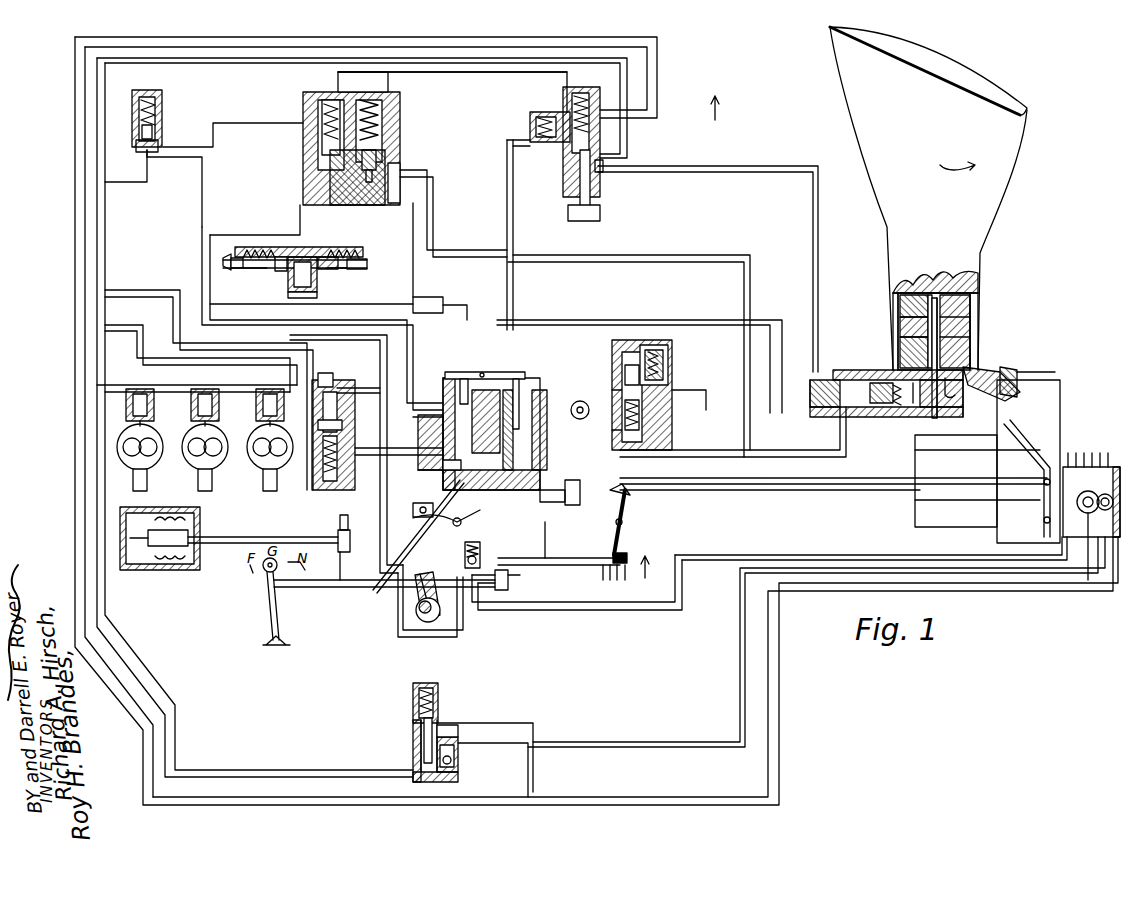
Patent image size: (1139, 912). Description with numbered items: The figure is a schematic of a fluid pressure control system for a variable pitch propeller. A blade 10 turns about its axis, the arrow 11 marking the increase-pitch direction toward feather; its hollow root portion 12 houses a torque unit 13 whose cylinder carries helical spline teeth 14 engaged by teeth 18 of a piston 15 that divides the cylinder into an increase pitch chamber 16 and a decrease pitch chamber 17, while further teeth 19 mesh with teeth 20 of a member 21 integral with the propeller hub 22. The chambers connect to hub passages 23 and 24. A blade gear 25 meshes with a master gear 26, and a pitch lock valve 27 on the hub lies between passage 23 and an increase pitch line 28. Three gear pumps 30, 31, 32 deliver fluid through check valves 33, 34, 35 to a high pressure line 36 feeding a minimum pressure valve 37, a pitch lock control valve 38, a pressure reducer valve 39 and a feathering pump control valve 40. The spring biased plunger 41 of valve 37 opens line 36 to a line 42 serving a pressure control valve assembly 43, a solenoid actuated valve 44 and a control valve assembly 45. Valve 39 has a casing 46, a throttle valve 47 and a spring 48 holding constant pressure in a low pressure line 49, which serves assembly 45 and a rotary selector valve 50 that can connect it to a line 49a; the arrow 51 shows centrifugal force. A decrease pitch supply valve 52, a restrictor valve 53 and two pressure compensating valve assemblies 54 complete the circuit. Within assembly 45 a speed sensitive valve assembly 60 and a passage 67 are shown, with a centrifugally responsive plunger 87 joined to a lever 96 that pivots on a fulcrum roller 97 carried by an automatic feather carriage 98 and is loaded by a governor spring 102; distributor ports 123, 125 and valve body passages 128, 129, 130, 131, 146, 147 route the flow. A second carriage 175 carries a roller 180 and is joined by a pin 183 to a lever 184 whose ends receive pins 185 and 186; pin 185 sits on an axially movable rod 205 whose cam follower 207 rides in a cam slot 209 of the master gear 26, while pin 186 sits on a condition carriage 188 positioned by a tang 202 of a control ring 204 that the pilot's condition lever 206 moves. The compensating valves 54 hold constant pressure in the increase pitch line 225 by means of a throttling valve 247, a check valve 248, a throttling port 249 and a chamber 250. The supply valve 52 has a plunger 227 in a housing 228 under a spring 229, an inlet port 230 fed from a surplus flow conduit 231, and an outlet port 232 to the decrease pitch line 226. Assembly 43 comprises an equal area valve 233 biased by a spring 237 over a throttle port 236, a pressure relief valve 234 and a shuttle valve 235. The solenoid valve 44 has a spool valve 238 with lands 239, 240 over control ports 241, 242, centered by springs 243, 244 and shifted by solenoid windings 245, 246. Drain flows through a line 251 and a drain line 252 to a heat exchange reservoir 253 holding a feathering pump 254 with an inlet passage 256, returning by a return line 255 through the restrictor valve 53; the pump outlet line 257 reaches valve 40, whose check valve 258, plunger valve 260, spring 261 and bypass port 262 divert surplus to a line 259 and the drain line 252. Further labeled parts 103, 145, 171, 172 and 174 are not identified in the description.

The funnel 10 is at (985, 205).
The arrow indicating direction 11 is at (958, 160).
The piston body 12 is at (975, 315).
The wall 13 is at (1008, 294).
The rod 14 is at (960, 350).
The piston section 15 is at (900, 325).
The lower piston section 16 is at (900, 355).
The upper piston section 17 is at (900, 300).
The cylinder wall 18 is at (893, 330).
The top surface 19 is at (933, 275).
The passage 20 is at (940, 330).
The bore 21 is at (948, 280).
The link 22 is at (960, 380).
The spring 23 is at (895, 408).
The pivot 24 is at (950, 400).
The knob 25 is at (1022, 372).
The lever 26 is at (1055, 376).
The valve 27 is at (818, 382).
The conduit 28 is at (848, 462).
The pump 30 is at (143, 472).
The pump 31 is at (208, 472).
The pump 32 is at (274, 467).
The relief valve 33 is at (154, 400).
The relief valve 34 is at (219, 400).
The relief valve 35 is at (278, 391).
The conduit 36 is at (113, 352).
The valve 37 is at (132, 150).
The valve 38 is at (603, 166).
The valve 39 is at (364, 496).
The valve 40 is at (413, 760).
The valve 41 is at (162, 118).
The conduit 42 is at (187, 162).
The valve 43 is at (303, 104).
The valve 44 is at (327, 236).
The valve assembly 45 is at (440, 390).
The spring 46 is at (326, 485).
The plunger 47 is at (333, 378).
The piston 48 is at (316, 465).
The conduit 49 is at (355, 445).
The conduit 49a is at (463, 622).
The cam 50 is at (420, 622).
The arrow 51 is at (728, 108).
The valve 52 is at (530, 124).
The roller 53 is at (480, 550).
The conduit 54 is at (438, 292).
The port 60 is at (443, 465).
The block 67 is at (552, 497).
The pivot 87 is at (571, 406).
The link 96 is at (435, 586).
The follower 97 is at (425, 587).
The link 98 is at (350, 542).
The lever 102 is at (490, 514).
The housing 103 is at (425, 503).
The cap 123 is at (470, 372).
The spool 125 is at (505, 405).
The port 128 is at (420, 405).
The rod 129 is at (475, 384).
The port 130 is at (440, 440).
The rod 131 is at (516, 384).
The lever 145 is at (440, 520).
The port 146 is at (411, 467).
The block 147 is at (581, 492).
The link 171 is at (338, 566).
The link 172 is at (378, 590).
The solenoid actuator 174 is at (180, 566).
The link 175 is at (570, 540).
The bar 180 is at (545, 558).
The pivot 183 is at (622, 522).
The lever 184 is at (620, 510).
The pivot 185 is at (630, 485).
The block 186 is at (627, 556).
The rack 188 is at (616, 569).
The rod 202 is at (510, 582).
The conduit 204 is at (530, 590).
The rod 205 is at (790, 495).
The lever 206 is at (265, 610).
The quadrant 207 is at (1040, 490).
The lever 209 is at (1047, 460).
The conduit 225 is at (540, 323).
The conduit 226 is at (605, 272).
The spring 227 is at (568, 115).
The spring 228 is at (530, 146).
The plunger 229 is at (563, 150).
The valve body 230 is at (588, 96).
The conduit 231 is at (480, 76).
The conduit 232 is at (507, 165).
The plunger 233 is at (382, 155).
The spring 234 is at (305, 167).
The port 235 is at (400, 184).
The valve body 236 is at (318, 188).
The spring 237 is at (380, 112).
The valve body 238 is at (380, 236).
The land 239 is at (281, 257).
The housing 240 is at (301, 275).
The rod 241 is at (270, 278).
The port 242 is at (303, 298).
The end cap 243 is at (236, 258).
The spring 244 is at (365, 255).
The spring 245 is at (245, 275).
The collar 246 is at (352, 272).
The spring 247 is at (640, 408).
The spring 248 is at (668, 362).
The plunger 249 is at (626, 385).
The valve 250 is at (632, 352).
The conduit 251 is at (385, 385).
The conduit 252 is at (660, 80).
The gear pump 253 is at (1118, 449).
The conduit 254 is at (1088, 580).
The conduit 255 is at (965, 552).
The gear 256 is at (1086, 490).
The conduit 257 is at (740, 665).
The ball valve 258 is at (455, 765).
The conduit 259 is at (533, 730).
The plunger 260 is at (440, 740).
The spring 261 is at (438, 705).
The port 262 is at (452, 750).